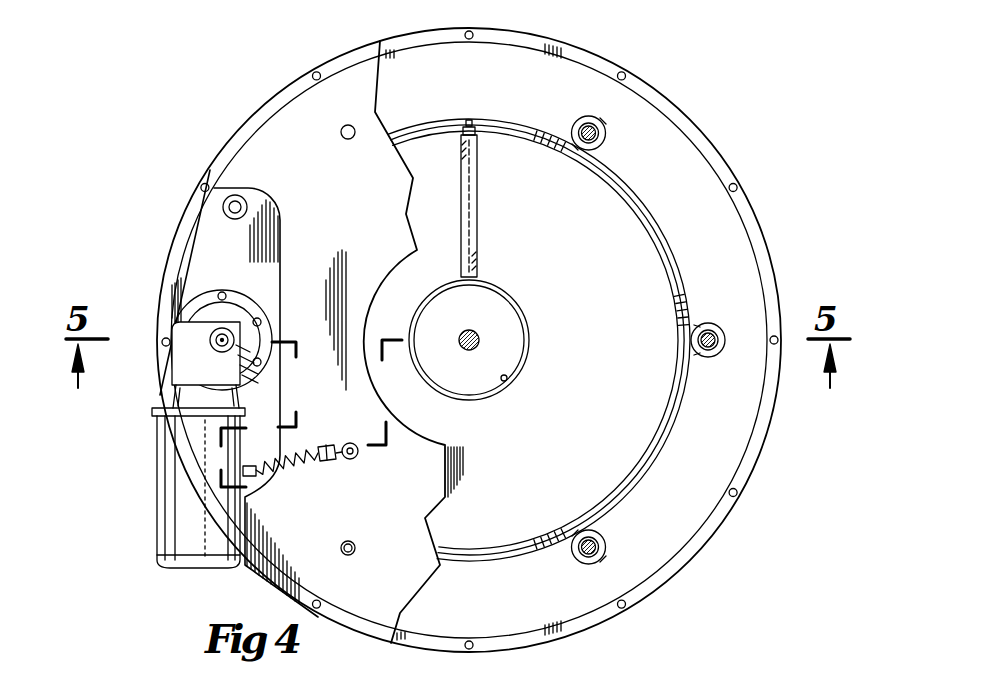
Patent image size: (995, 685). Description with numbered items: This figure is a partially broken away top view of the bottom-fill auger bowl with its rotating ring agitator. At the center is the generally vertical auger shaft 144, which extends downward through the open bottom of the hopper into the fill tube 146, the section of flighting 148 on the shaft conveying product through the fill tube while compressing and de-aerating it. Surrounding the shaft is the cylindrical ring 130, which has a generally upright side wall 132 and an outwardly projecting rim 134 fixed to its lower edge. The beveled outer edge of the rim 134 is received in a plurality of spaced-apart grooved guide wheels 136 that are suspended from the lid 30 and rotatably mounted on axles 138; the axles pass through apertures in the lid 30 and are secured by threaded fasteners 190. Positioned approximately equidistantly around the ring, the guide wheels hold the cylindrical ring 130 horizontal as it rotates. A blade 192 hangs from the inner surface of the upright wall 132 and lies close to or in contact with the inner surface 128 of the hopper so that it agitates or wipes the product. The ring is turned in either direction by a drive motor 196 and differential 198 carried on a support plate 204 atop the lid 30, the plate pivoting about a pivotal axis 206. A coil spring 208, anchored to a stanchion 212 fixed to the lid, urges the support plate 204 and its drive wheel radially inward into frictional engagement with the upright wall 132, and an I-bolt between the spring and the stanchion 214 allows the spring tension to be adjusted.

The lid 30 is at (382, 218).
The inner surface 128 is at (722, 469).
The cylindrical ring 130 is at (650, 437).
The upright side wall 132 is at (655, 236).
The rim 134 is at (672, 240).
The grooved guide wheels 136 is at (592, 117).
The axles 138 is at (606, 131).
The auger shaft 144 is at (479, 337).
The fill tube 146 is at (507, 380).
The flighting 148 is at (512, 353).
The threaded fasteners 190 is at (341, 138).
The blade 192 is at (478, 235).
The drive motor 196 is at (165, 488).
The differential 198 is at (174, 352).
The support plate 204 is at (191, 247).
The pivotal axis 206 is at (222, 207).
The coil spring 208 is at (308, 474).
The stanchion 212 is at (352, 460).
The stanchion 214 is at (328, 447).